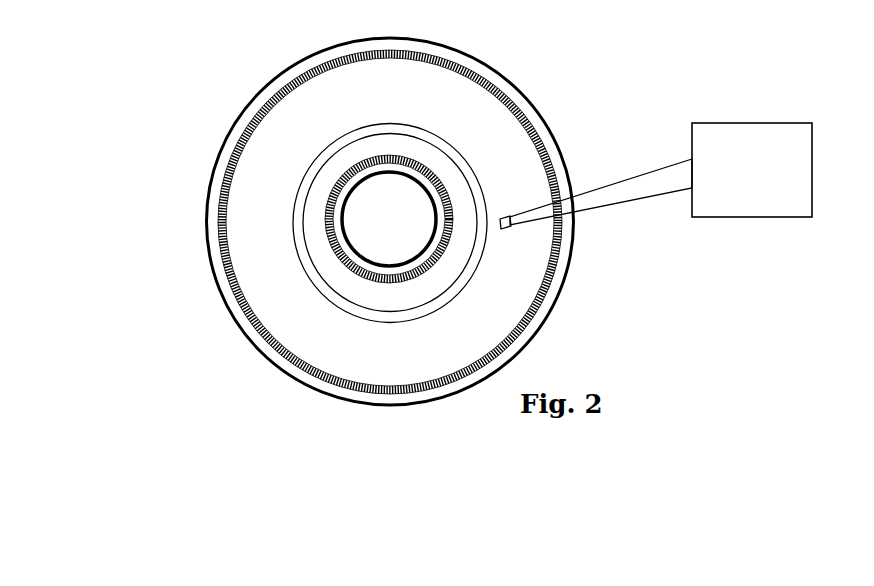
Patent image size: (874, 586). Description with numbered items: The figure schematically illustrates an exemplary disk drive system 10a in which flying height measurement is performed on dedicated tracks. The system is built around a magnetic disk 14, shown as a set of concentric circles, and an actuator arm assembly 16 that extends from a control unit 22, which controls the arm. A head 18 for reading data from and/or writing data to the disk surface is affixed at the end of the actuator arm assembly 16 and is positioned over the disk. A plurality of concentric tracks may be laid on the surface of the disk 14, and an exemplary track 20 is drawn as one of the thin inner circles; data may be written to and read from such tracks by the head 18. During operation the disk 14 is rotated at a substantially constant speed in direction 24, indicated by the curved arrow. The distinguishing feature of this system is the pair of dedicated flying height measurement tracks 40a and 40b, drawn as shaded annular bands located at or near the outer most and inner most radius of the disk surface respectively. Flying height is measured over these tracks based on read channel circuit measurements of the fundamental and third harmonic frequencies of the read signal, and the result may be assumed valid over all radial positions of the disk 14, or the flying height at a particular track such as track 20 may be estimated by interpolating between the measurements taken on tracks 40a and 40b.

The disk drive system 10a is at (329, 221).
The magnetic disk 14 is at (400, 319).
The actuator arm assembly 16 is at (619, 176).
The head 18 is at (509, 233).
The track 20 is at (294, 195).
The control unit 22 is at (752, 170).
The direction 24 is at (505, 146).
The dedicated flying height measurement track 40a is at (305, 80).
The dedicated flying height measurement track 40b is at (334, 258).